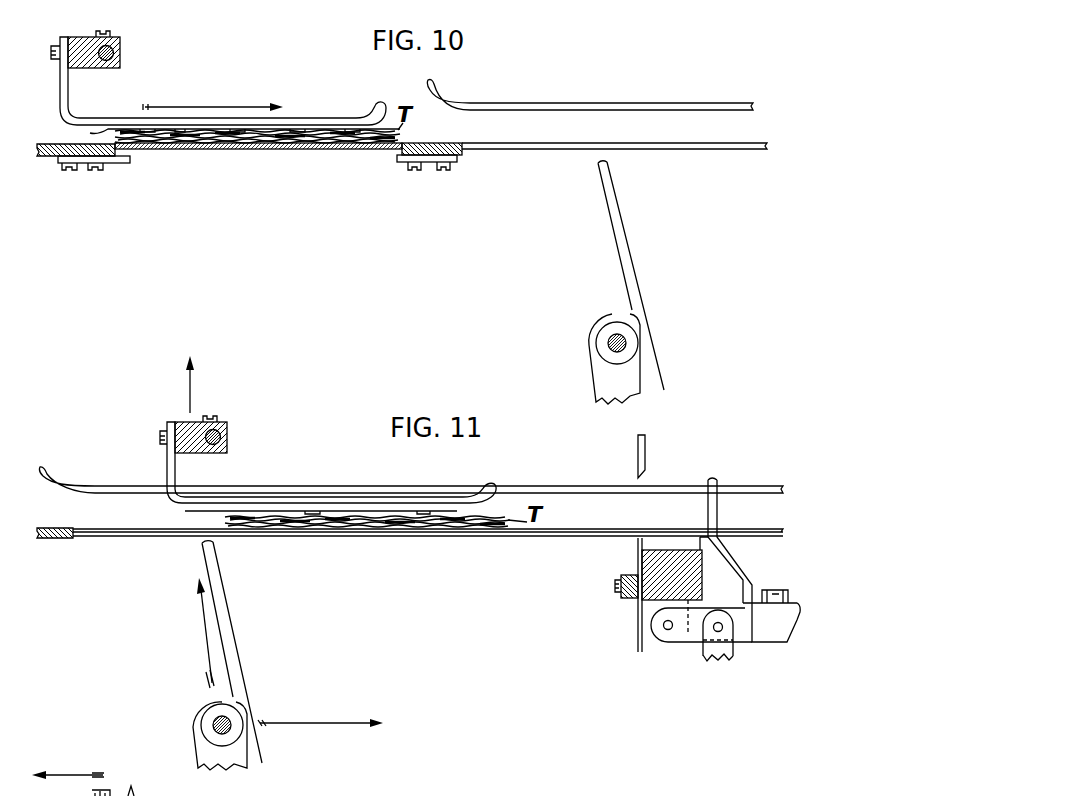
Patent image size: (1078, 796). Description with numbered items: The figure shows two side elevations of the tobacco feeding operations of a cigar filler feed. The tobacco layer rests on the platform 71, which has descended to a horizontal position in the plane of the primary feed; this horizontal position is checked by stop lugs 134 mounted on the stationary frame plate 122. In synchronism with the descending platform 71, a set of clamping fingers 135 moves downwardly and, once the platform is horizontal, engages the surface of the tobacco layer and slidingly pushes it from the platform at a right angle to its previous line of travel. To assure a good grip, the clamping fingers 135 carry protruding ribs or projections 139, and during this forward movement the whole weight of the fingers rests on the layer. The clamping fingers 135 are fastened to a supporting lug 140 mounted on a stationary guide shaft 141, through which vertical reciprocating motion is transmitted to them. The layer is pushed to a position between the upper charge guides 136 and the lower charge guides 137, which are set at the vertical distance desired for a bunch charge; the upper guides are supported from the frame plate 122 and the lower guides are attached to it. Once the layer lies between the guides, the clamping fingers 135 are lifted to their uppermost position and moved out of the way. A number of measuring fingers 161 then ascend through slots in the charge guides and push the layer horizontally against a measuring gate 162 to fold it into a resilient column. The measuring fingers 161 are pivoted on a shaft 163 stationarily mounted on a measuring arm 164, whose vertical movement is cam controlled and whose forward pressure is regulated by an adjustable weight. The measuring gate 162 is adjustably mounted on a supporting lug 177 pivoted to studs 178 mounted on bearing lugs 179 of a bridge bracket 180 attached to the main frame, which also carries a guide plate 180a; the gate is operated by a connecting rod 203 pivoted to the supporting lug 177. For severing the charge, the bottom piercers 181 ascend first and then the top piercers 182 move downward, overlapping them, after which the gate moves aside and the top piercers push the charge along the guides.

In FIG. 10, the platform 71 is at (207, 150).
In FIG. 10, the frame plate 122 is at (55, 160).
In FIG. 11, the frame plate 122 is at (57, 540).
In FIG. 10, the stop lugs 134 is at (125, 163).
In FIG. 10, the clamping fingers 135 is at (68, 93).
In FIG. 11, the clamping fingers 135 is at (174, 474).
In FIG. 10, the upper charge guides 136 is at (596, 97).
In FIG. 11, the upper charge guides 136 is at (88, 489).
In FIG. 10, the lower charge guides 137 is at (728, 145).
In FIG. 11, the lower charge guides 137 is at (132, 538).
In FIG. 10, the protruding ribs 139 is at (90, 133).
In FIG. 11, the protruding ribs 139 is at (196, 511).
In FIG. 10, the supporting lug 140 is at (121, 41).
In FIG. 11, the supporting lug 140 is at (227, 425).
In FIG. 10, the guide shaft 141 is at (114, 56).
In FIG. 11, the guide shaft 141 is at (221, 439).
In FIG. 10, the measuring fingers 161 is at (608, 197).
In FIG. 11, the measuring fingers 161 is at (221, 604).
In FIG. 11, the measuring gate 162 is at (715, 483).
In FIG. 10, the shaft 163 is at (611, 341).
In FIG. 11, the shaft 163 is at (216, 721).
In FIG. 10, the measuring arm 164 is at (652, 374).
In FIG. 11, the measuring arm 164 is at (259, 753).
In FIG. 11, the supporting lug 177 is at (772, 628).
In FIG. 11, the studs 178 is at (670, 631).
In FIG. 11, the bearing lugs 179 is at (642, 604).
In FIG. 11, the bridge bracket 180 is at (696, 568).
In FIG. 11, the guide plate 180a is at (629, 603).
In FIG. 11, the bottom piercers 181 is at (634, 562).
In FIG. 11, the top piercers 182 is at (645, 448).
In FIG. 11, the connecting rod 203 is at (723, 649).